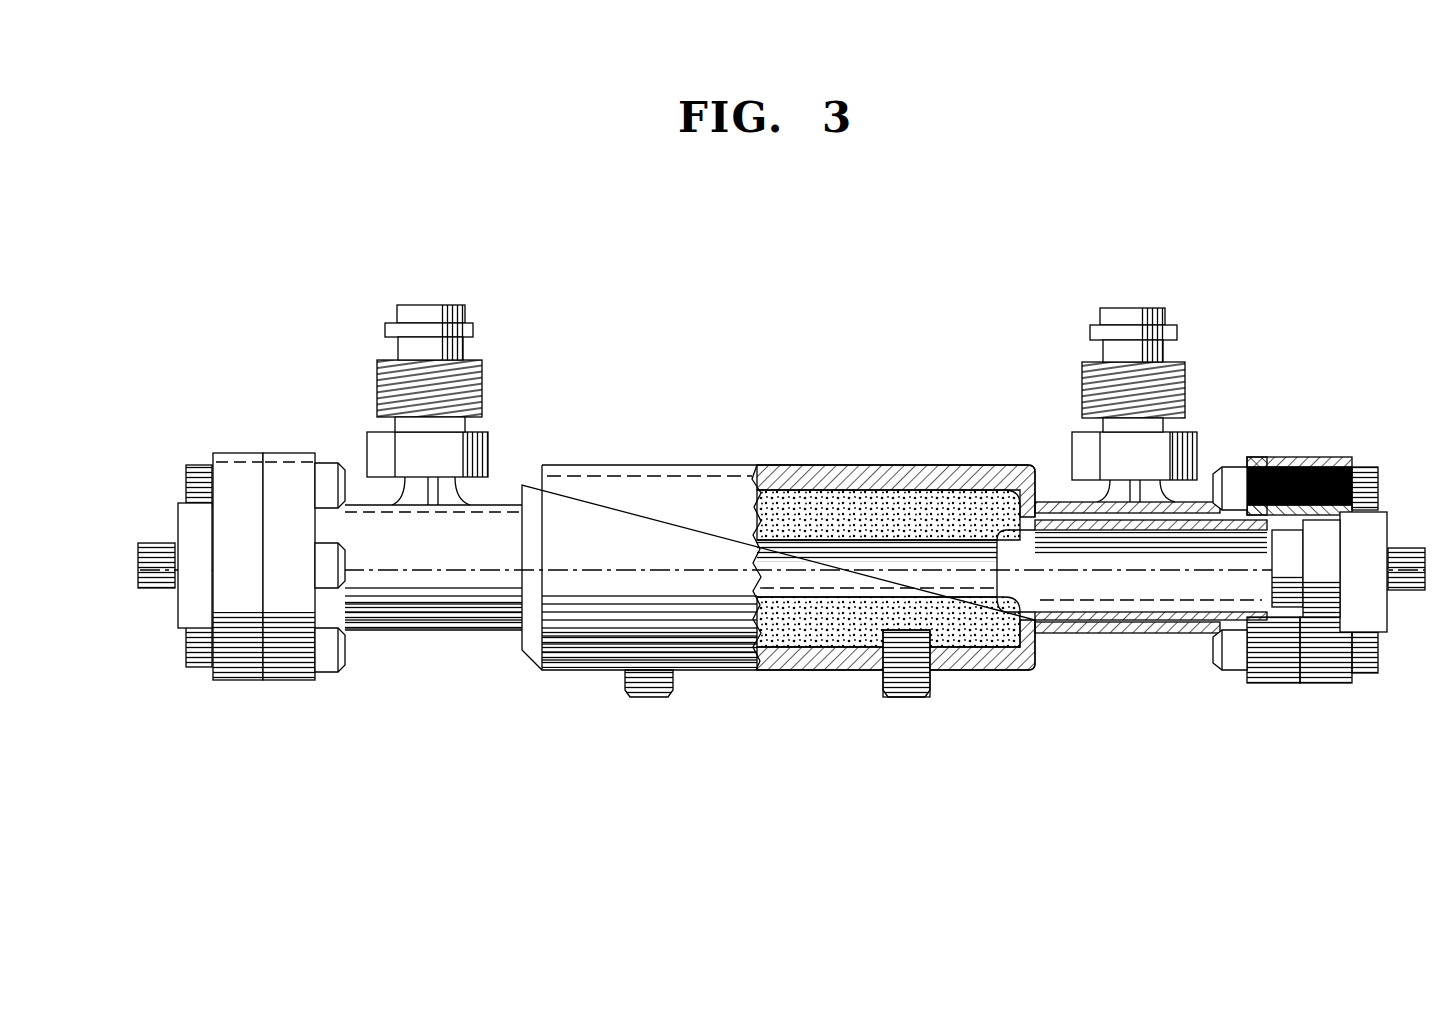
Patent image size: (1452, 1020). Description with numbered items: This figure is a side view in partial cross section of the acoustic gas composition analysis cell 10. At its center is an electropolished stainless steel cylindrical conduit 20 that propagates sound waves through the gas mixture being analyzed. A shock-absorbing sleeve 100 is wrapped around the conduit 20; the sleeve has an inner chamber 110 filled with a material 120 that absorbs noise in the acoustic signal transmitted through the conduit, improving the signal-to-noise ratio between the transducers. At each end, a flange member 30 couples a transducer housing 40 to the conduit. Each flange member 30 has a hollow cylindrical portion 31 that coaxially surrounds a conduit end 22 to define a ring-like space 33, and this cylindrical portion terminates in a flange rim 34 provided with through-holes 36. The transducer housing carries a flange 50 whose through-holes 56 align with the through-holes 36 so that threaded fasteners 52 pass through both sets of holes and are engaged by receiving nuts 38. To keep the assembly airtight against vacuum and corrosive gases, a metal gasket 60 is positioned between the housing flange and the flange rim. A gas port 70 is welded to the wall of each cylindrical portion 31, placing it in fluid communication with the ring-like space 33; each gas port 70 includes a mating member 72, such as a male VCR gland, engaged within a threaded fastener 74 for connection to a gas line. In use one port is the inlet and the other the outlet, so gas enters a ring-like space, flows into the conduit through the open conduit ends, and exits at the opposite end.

The acoustic gas composition analysis cell 10 is at (758, 775).
The cylindrical conduit 20 is at (515, 655).
The conduit end 22 is at (1262, 578).
The flange member 30 is at (450, 617).
The hollow cylindrical portion 31 is at (495, 505).
The ring-like space 33 is at (1165, 620).
The flange rim 34 is at (288, 460).
The through-hole 36 is at (1248, 465).
The receiving nut 38 is at (340, 650).
The transducer housing 40 is at (187, 525).
The flange 50 is at (238, 458).
The threaded fastener 52 is at (197, 465).
The through-hole 56 is at (1350, 468).
The gasket 60 is at (1308, 528).
The gas port 70 is at (388, 325).
The mating member 72 is at (432, 310).
The threaded fastener 74 is at (482, 385).
The shock-absorbing sleeve 100 is at (702, 480).
The inner chamber 110 is at (975, 650).
The material 120 is at (850, 635).